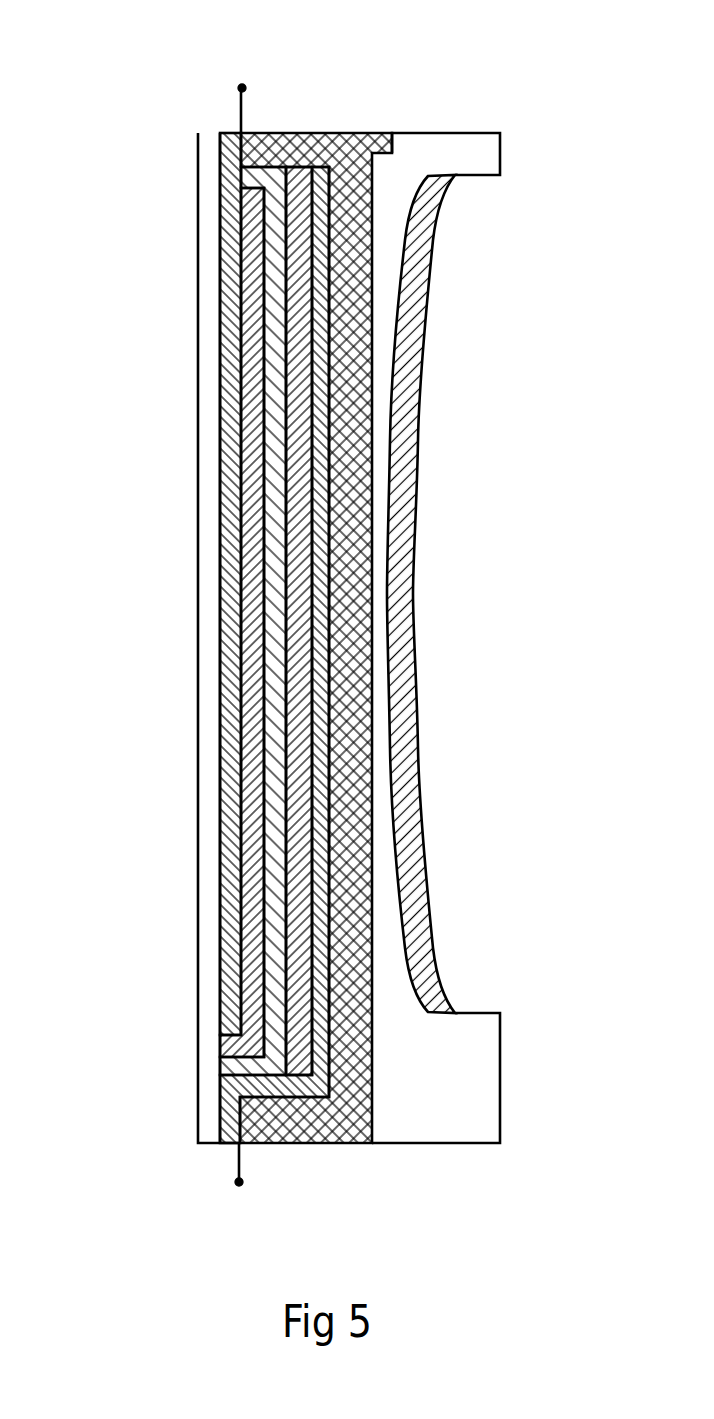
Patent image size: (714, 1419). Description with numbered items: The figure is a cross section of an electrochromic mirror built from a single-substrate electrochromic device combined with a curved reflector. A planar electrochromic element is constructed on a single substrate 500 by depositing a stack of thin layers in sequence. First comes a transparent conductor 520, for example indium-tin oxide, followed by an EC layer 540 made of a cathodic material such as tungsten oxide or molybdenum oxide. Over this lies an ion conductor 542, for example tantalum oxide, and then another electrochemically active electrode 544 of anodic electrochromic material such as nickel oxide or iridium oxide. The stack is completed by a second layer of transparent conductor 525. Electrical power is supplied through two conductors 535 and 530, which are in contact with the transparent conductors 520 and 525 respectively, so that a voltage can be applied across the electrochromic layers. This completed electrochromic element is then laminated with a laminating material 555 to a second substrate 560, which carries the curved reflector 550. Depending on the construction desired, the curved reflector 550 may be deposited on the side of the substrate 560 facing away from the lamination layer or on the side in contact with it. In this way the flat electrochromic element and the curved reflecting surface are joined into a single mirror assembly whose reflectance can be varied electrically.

The single substrate 500 is at (208, 1100).
The transparent conductor 520 is at (232, 302).
The transparent conductor 525 is at (318, 397).
The conductor 530 is at (258, 1187).
The conductor 535 is at (255, 75).
The EC layer 540 is at (255, 480).
The ion conductor 542 is at (273, 603).
The electrochemically active electrode 544 is at (302, 752).
The curved reflector 550 is at (400, 502).
The laminating material 555 is at (345, 147).
The substrate 560 is at (455, 1130).